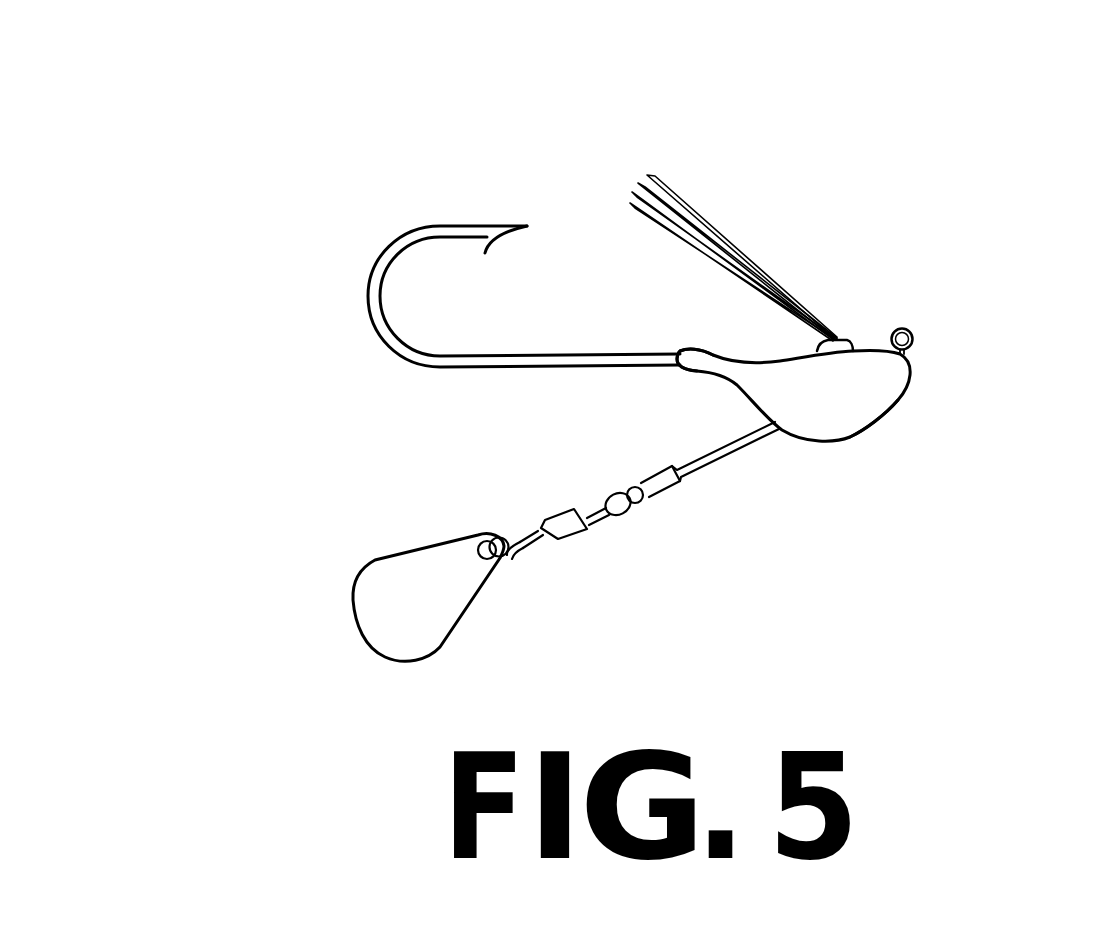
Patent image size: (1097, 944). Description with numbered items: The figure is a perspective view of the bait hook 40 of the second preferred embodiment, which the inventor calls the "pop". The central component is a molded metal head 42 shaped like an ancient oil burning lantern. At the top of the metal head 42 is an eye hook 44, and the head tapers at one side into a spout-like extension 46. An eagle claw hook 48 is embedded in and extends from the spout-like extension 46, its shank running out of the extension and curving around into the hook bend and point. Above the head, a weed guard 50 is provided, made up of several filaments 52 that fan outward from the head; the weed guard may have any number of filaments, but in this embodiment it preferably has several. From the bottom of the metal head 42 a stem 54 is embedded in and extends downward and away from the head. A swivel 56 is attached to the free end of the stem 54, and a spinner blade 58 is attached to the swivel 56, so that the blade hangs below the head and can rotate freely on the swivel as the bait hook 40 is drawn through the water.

The bait hook 40 is at (903, 390).
The molded metal head 42 is at (870, 427).
The eye hook 44 is at (910, 328).
The spout-like extension 46 is at (700, 349).
The eagle claw hook 48 is at (368, 300).
The weed guard 50 is at (832, 326).
The filaments 52 is at (647, 177).
The stem 54 is at (727, 452).
The swivel 56 is at (560, 513).
The spinner blade 58 is at (358, 582).